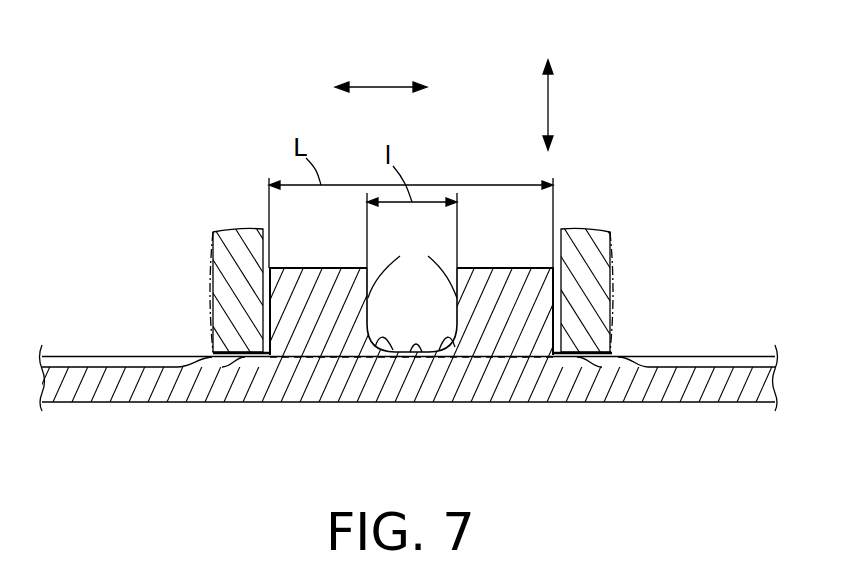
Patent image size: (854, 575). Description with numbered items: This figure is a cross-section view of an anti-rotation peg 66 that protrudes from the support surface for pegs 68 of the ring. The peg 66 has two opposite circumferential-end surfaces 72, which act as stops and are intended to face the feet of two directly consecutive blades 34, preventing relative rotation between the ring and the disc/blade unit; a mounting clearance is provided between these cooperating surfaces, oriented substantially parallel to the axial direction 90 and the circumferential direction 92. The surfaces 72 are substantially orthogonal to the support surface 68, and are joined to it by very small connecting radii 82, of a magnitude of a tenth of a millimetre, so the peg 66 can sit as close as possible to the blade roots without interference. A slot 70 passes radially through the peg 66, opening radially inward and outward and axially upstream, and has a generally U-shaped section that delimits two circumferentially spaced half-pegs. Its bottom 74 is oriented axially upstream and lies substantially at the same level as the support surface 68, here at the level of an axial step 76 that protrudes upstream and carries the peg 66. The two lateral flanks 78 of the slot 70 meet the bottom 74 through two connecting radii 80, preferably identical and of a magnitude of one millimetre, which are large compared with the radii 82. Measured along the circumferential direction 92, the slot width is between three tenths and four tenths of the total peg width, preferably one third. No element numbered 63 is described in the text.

The blades 34 is at (245, 243).
The substrate 63 is at (613, 376).
The peg 66 is at (430, 230).
The support surface for pegs 68 is at (573, 357).
The slot 70 is at (408, 318).
The circumferential-end surfaces 72 is at (268, 300).
The bottom 74 is at (413, 346).
The axial steps 76 is at (248, 362).
The lateral flanks 78 is at (412, 263).
The connecting radii 80 is at (382, 338).
The connecting radii 82 is at (218, 328).
The axial direction 90 is at (550, 108).
The circumferential direction 92 is at (385, 87).